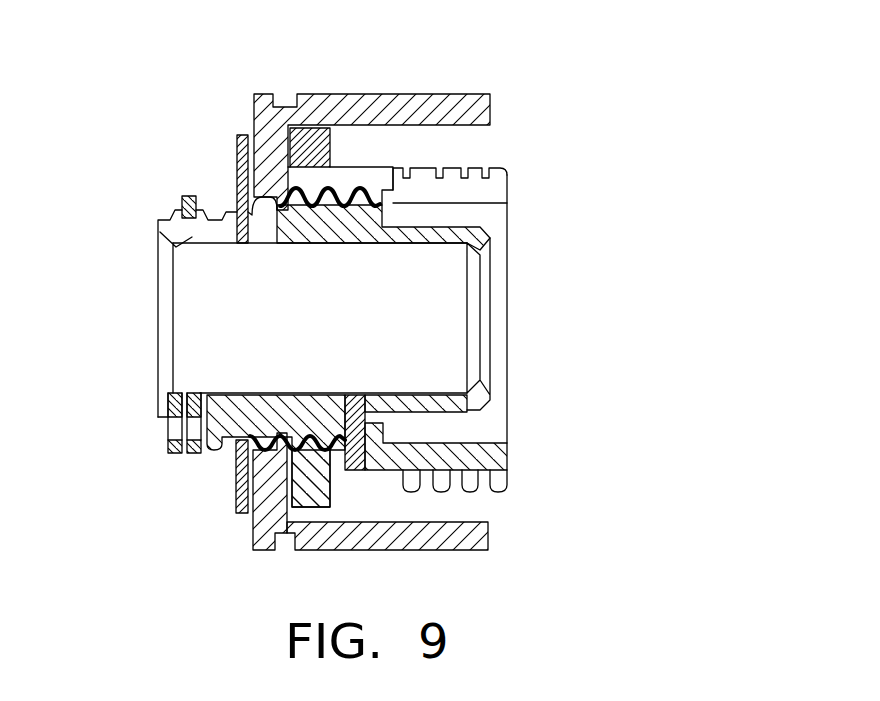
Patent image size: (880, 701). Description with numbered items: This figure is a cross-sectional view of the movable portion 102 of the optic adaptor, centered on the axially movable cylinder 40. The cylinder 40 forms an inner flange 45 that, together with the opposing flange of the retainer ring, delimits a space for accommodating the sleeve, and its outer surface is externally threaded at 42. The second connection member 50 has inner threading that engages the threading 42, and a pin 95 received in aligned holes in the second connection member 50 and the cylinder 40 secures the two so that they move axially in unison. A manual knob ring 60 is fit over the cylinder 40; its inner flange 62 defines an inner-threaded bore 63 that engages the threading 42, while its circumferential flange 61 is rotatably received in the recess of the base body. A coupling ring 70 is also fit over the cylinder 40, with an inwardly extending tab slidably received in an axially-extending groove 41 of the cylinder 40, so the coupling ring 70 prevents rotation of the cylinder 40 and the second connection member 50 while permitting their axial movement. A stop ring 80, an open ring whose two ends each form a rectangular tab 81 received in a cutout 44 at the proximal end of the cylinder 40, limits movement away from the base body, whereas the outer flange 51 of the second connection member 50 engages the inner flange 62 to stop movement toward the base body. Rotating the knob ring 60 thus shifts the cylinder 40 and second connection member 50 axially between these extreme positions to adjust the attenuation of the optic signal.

The movable portion 102 is at (534, 233).
The axially movable cylinder 40 is at (458, 226).
The axially-extending groove 41 is at (176, 248).
The external threading 42 is at (226, 448).
The cutout 44 is at (172, 392).
The inner flange 45 is at (478, 253).
The second connection member 50 is at (372, 183).
The outer flange 51 is at (333, 514).
The manual knob ring 60 is at (328, 102).
The circumferential flange 61 is at (270, 513).
The inner flange 62 is at (272, 510).
The inner-threaded bore 63 is at (240, 500).
The coupling ring 70 is at (242, 175).
The stop ring 80 is at (184, 203).
The rectangular tab 81 is at (172, 427).
The pin 95 is at (338, 470).